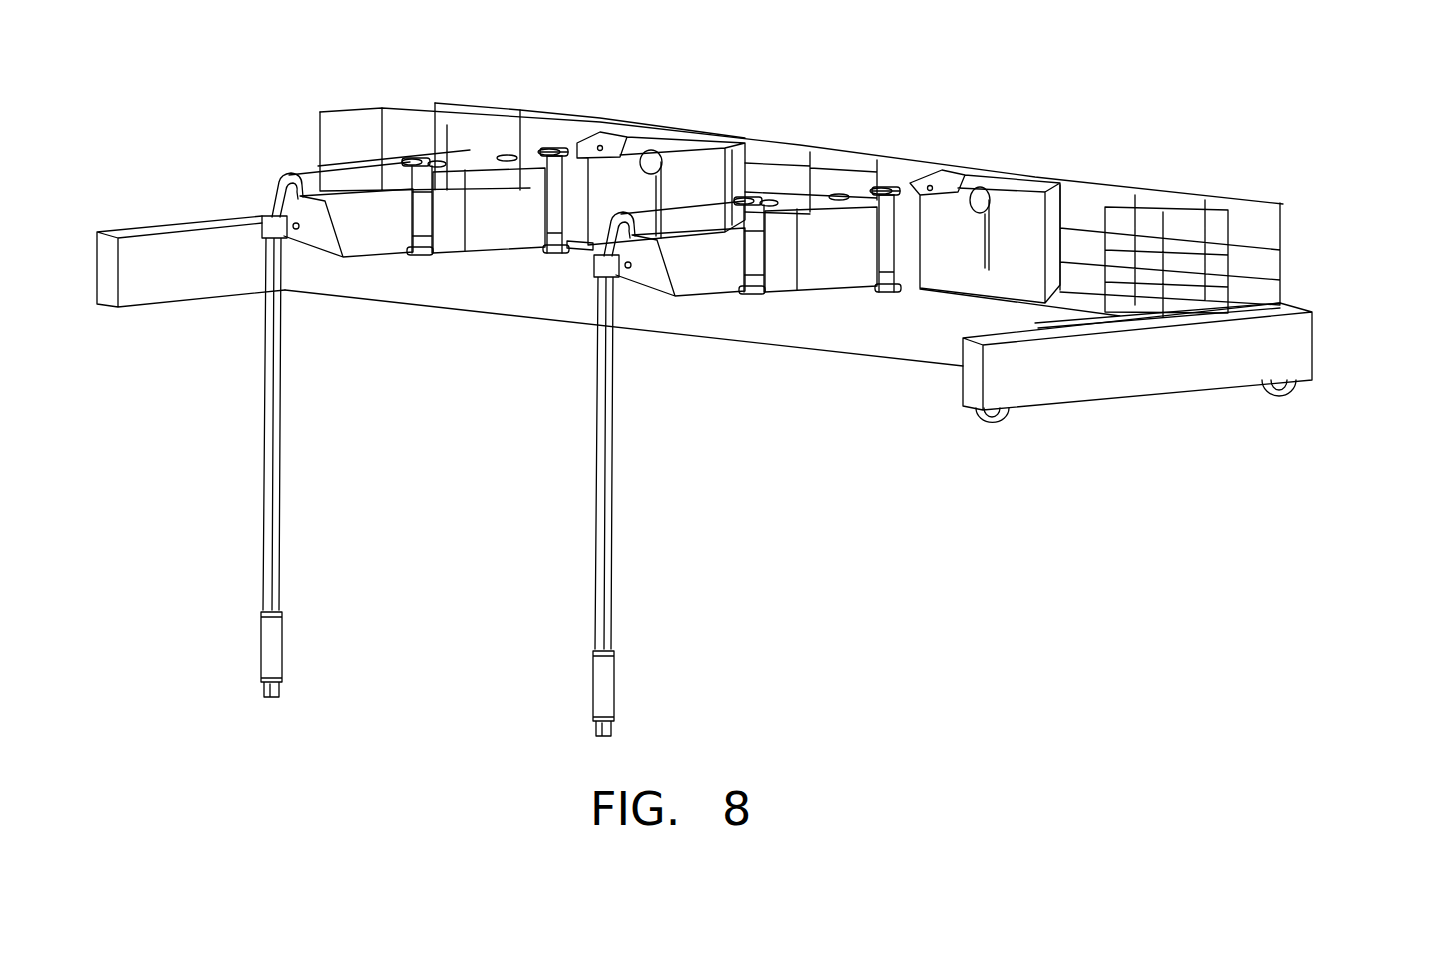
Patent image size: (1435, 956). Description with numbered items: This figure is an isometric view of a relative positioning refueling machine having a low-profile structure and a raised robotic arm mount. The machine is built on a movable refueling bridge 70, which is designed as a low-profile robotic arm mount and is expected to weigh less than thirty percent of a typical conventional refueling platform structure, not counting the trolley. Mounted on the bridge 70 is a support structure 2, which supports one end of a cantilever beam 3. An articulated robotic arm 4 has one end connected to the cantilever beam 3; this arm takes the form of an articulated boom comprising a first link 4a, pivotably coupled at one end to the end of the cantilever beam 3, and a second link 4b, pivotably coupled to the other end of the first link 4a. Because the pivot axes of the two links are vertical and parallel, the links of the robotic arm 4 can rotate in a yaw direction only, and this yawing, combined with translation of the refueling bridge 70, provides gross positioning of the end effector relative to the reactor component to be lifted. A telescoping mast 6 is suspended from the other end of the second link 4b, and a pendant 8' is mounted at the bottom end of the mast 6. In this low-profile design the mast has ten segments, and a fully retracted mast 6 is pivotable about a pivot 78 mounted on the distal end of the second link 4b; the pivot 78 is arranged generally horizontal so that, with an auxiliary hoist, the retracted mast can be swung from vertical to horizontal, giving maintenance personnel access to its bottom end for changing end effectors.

The support structure 2 is at (630, 165).
The cantilever beam 3 is at (572, 191).
The articulated robotic arm 4 is at (592, 271).
The first link 4a is at (490, 244).
The second link 4b is at (372, 244).
The telescoping mast 6 is at (294, 441).
The foot 8' is at (476, 674).
The refueling bridge 70 is at (1330, 335).
The pivot 78 is at (296, 230).